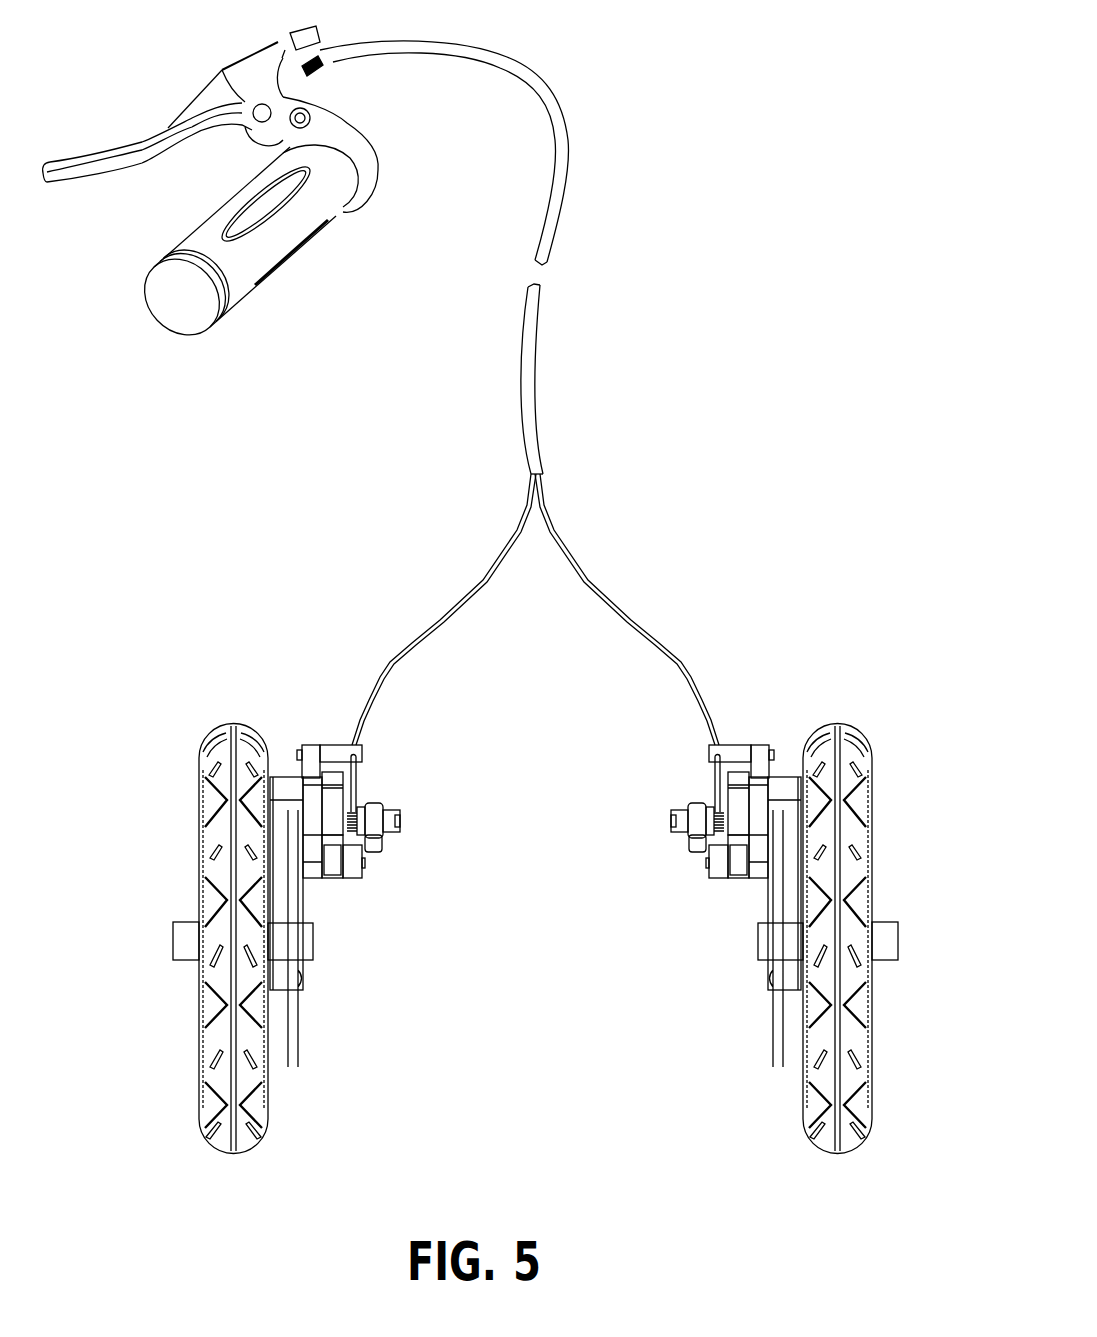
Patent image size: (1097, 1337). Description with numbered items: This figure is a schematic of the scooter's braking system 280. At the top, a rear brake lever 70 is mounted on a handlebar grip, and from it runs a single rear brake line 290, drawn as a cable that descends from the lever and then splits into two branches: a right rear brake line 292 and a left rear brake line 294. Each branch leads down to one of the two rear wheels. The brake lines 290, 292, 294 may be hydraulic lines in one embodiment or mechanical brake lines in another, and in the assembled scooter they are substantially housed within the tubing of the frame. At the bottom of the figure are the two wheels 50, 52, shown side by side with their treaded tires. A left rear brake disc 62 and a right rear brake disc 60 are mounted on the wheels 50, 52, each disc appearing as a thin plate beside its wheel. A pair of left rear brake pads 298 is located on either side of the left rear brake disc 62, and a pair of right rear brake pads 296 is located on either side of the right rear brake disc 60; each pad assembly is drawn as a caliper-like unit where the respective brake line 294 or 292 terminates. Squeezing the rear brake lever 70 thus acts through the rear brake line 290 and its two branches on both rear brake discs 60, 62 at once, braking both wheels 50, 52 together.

The braking system 280 is at (718, 58).
The rear brake lever 70 is at (140, 138).
The rear brake line 290 is at (520, 369).
The right rear brake line 292 is at (654, 640).
The left rear brake line 294 is at (416, 640).
The wheel 50 is at (224, 1154).
The wheel 52 is at (848, 1153).
The left rear brake disc 62 is at (299, 1031).
The right rear brake disc 60 is at (774, 1033).
The left rear brake pads 298 is at (278, 847).
The right rear brake pads 296 is at (792, 847).